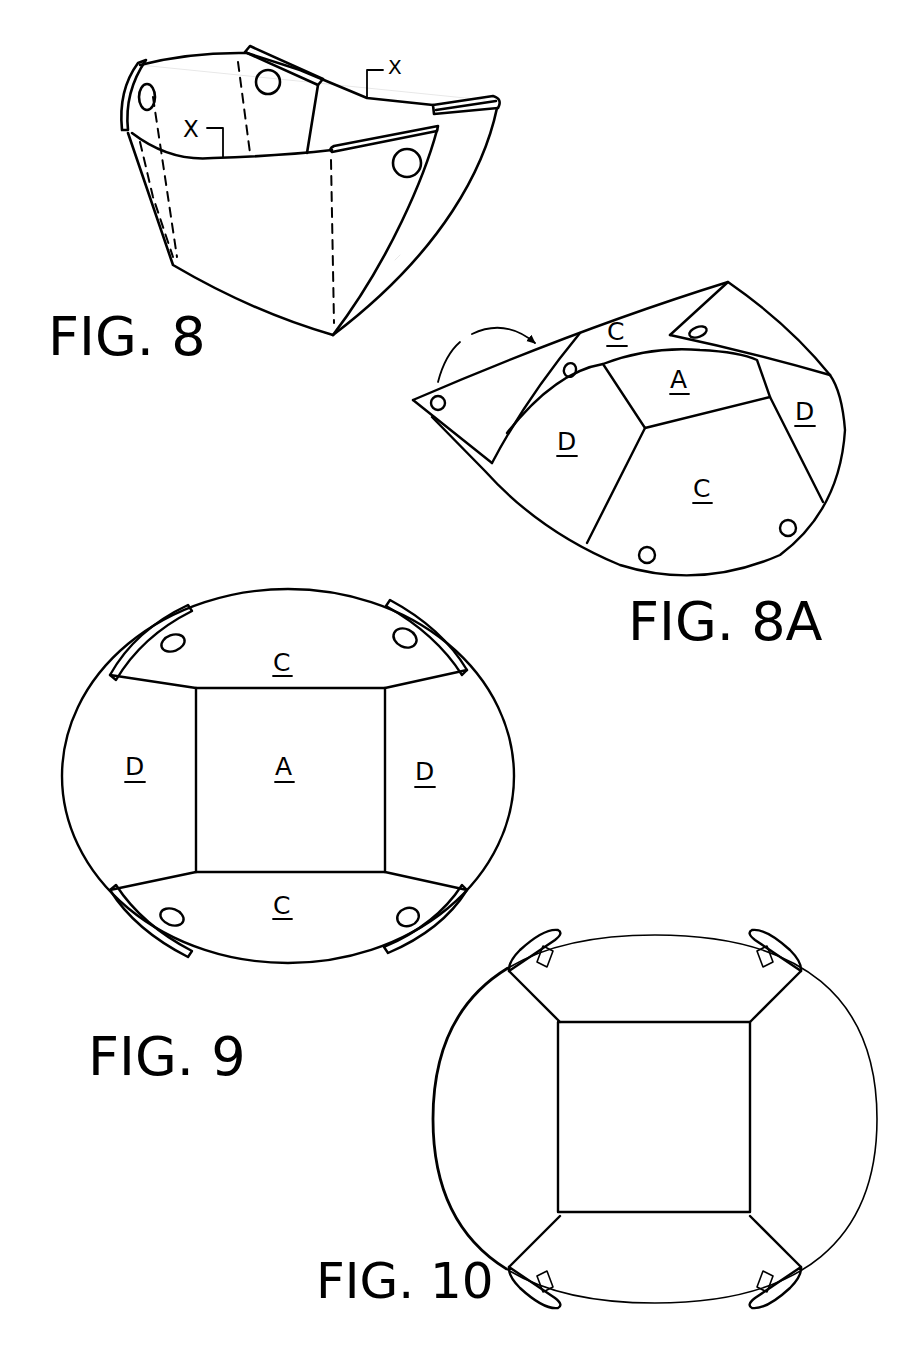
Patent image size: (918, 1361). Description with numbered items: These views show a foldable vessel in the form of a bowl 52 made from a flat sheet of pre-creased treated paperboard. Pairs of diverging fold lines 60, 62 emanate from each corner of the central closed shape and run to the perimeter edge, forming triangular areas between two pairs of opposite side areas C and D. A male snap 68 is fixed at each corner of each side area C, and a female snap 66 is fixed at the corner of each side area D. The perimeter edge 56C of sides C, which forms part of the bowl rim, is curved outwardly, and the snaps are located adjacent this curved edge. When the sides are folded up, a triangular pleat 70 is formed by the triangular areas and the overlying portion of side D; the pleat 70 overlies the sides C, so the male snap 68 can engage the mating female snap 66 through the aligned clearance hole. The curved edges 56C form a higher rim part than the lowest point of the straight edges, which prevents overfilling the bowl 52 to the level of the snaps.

In FIG. 8, the bowl 52 is at (502, 36).
In FIG. 9, the bowl 52 is at (578, 708).
In FIG. 10, the bowl 52 is at (768, 886).
In FIG. 8, the perimeter edge of sides C 56C is at (178, 58).
In FIG. 9, the perimeter edge of sides C 56C is at (288, 590).
In FIG. 8, the fold line 60 is at (380, 264).
In FIG. 8, the fold line 62 is at (333, 290).
In FIG. 8, the female snap 66 is at (416, 156).
In FIG. 8, the male snap 68 is at (140, 94).
In FIG. 9, the male snap 68 is at (184, 645).
In FIG. 8A, the pleat 70 is at (740, 320).
In FIG. 9, the pleat 70 is at (148, 641).